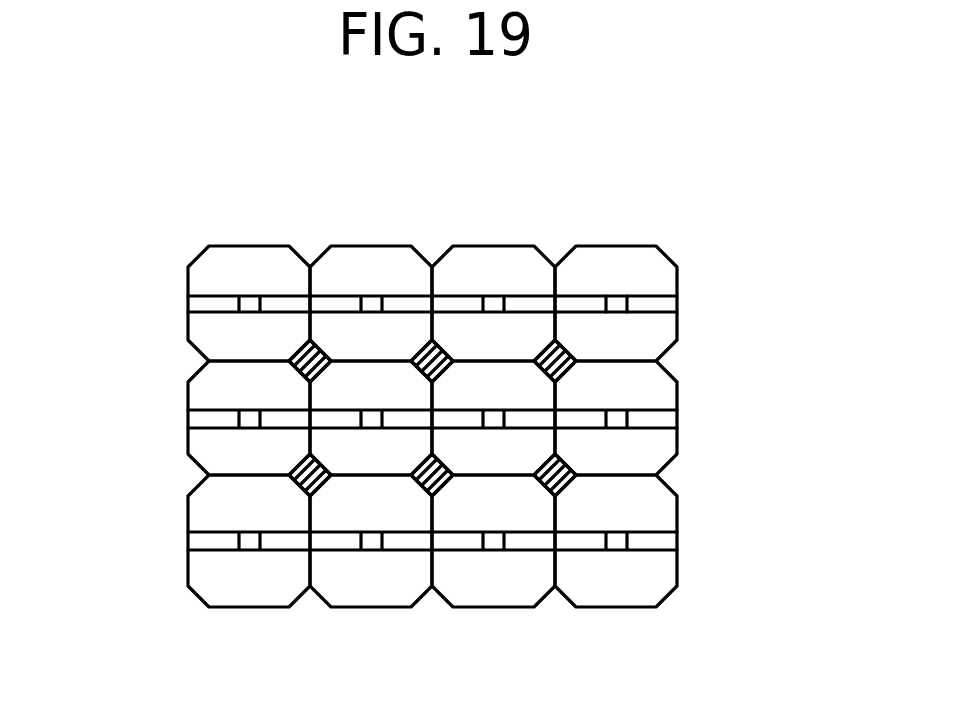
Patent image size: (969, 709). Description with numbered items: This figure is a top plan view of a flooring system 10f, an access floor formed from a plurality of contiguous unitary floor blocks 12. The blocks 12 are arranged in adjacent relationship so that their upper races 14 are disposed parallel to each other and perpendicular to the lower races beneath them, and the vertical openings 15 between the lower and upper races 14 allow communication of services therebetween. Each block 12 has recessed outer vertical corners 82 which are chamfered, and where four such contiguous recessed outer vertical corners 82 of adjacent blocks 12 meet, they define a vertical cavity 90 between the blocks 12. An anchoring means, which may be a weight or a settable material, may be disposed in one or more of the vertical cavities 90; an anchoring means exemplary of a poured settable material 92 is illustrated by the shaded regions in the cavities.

The flooring system 10f is at (878, 190).
The floor block 12 is at (352, 262).
The upper race 14 is at (133, 303).
The vertical opening 15 is at (623, 277).
The recessed outer vertical corner 82 is at (689, 244).
The vertical cavity 90 is at (587, 342).
The poured settable material 92 is at (298, 355).